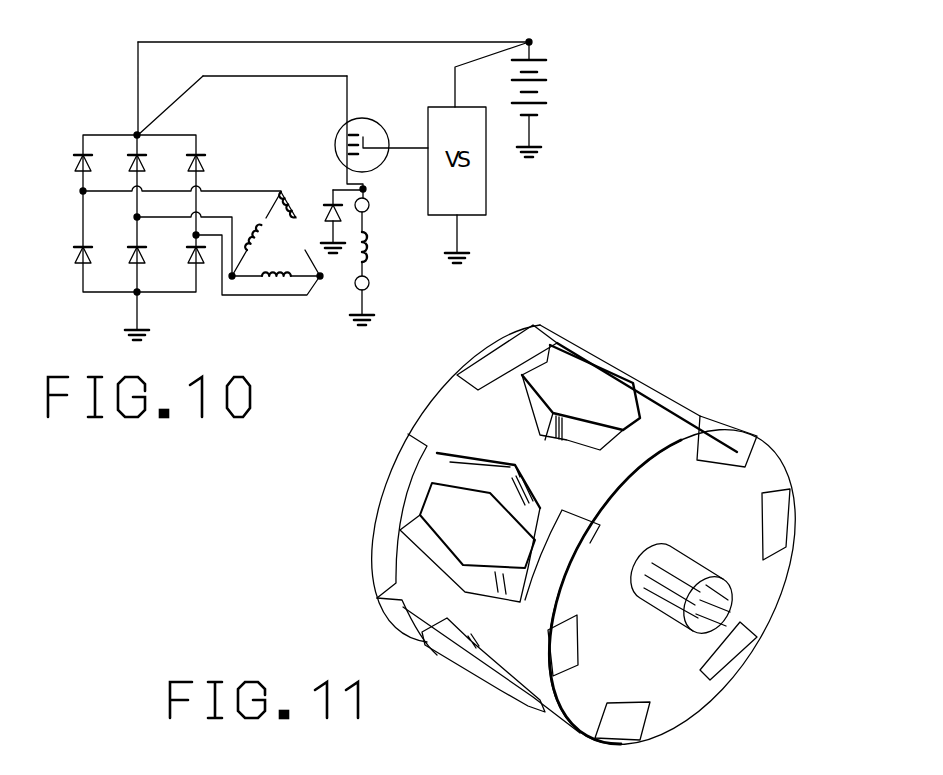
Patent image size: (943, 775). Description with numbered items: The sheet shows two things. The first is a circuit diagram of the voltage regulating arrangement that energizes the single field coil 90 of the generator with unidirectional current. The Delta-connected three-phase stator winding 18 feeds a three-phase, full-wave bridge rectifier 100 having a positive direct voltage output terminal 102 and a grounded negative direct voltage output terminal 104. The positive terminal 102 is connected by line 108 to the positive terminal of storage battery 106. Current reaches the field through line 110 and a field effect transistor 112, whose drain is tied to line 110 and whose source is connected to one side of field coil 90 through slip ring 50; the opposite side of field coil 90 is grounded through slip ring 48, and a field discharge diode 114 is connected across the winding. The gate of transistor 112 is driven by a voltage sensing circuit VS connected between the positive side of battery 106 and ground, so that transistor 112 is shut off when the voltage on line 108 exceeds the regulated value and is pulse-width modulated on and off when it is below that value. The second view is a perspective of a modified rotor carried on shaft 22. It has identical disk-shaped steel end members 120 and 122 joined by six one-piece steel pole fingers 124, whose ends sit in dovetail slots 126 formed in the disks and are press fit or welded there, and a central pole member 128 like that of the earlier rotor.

In FIG. 10, the stator winding 18 is at (287, 190).
In FIG. 11, the shaft 22 is at (720, 575).
In FIG. 10, the slip ring 48 is at (369, 288).
In FIG. 10, the slip ring 50 is at (369, 205).
In FIG. 10, the field coil 90 is at (369, 251).
In FIG. 10, the bridge rectifier 100 is at (203, 147).
In FIG. 10, the positive direct voltage output terminal 102 is at (137, 135).
In FIG. 10, the negative direct voltage output terminal 104 is at (137, 292).
In FIG. 10, the storage battery 106 is at (541, 83).
In FIG. 10, the line 108 is at (297, 42).
In FIG. 10, the line 110 is at (307, 76).
In FIG. 10, the field effect transistor 112 is at (388, 135).
In FIG. 10, the field discharge diode 114 is at (330, 206).
In FIG. 11, the disk-shaped steel end member 120 is at (763, 463).
In FIG. 11, the disk-shaped steel end member 122 is at (510, 343).
In FIG. 11, the pole finger 124 is at (450, 423).
In FIG. 11, the dovetail slot 126 is at (767, 507).
In FIG. 11, the central pole member 128 is at (568, 380).